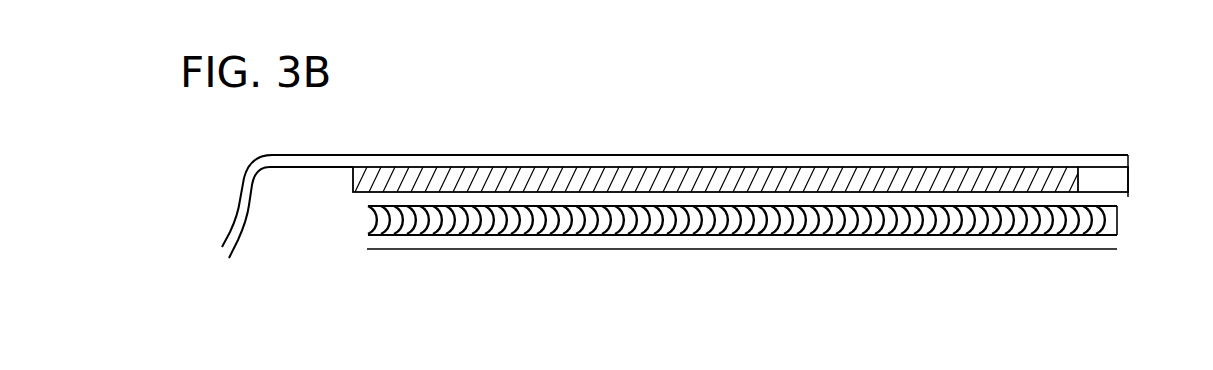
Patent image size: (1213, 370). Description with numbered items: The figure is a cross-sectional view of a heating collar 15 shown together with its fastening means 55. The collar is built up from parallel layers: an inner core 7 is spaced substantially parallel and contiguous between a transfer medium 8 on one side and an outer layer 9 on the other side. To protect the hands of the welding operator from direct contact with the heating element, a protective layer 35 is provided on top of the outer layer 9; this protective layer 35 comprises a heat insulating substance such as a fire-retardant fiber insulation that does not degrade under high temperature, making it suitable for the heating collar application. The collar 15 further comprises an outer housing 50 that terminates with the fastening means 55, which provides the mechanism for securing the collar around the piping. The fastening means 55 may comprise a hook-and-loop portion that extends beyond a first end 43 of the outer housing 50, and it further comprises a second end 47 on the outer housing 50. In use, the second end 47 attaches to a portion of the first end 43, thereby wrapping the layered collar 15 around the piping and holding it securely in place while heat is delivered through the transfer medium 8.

The fastening means 55 is at (239, 198).
The first end 43 is at (367, 155).
The outer housing 50 is at (728, 160).
The outer layer 9 is at (588, 193).
The protective layer 35 is at (872, 192).
The second end 47 is at (1088, 162).
The inner core 7 is at (502, 220).
The transfer medium 8 is at (728, 240).
The heating collar 15 is at (1138, 230).